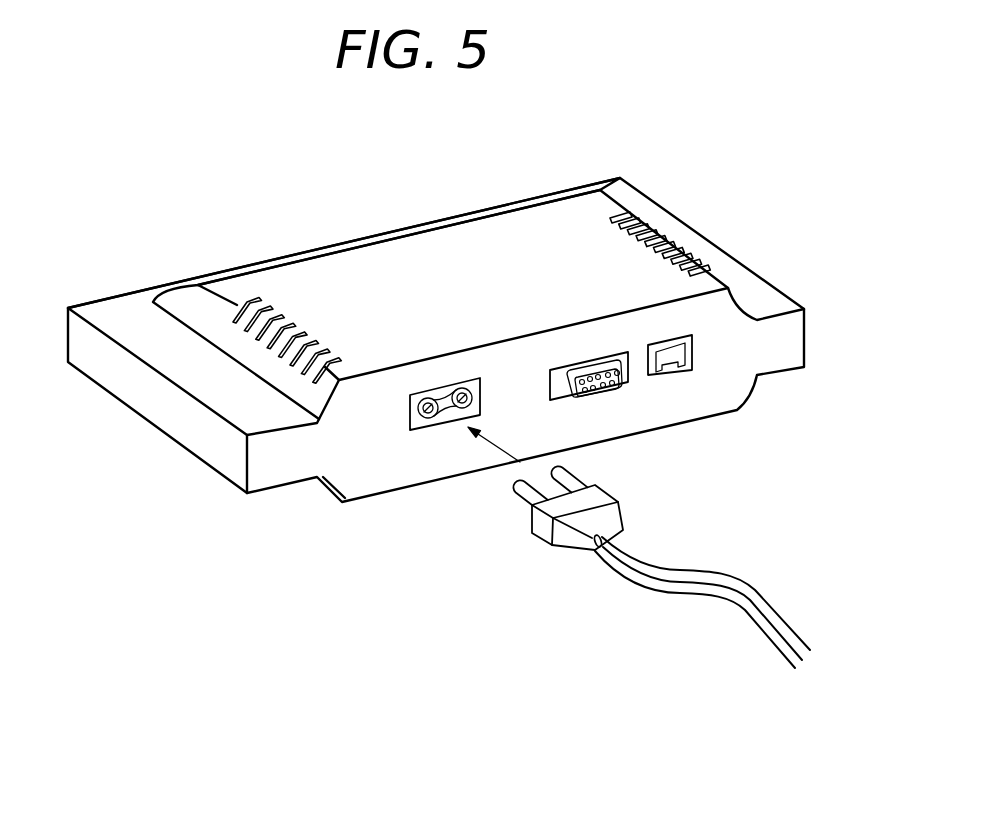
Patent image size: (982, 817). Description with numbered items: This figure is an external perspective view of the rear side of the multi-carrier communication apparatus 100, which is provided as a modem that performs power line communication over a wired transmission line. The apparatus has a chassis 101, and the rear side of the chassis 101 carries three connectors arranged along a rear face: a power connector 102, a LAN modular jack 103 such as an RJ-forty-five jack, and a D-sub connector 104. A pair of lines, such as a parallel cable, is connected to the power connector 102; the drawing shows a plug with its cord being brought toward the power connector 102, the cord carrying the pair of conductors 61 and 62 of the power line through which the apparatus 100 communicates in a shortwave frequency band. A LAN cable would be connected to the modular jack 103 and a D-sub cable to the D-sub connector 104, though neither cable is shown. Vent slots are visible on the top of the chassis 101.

The multi-carrier communication apparatus 100 is at (437, 212).
The chassis 101 is at (227, 268).
The power connector 102 is at (438, 429).
The LAN modular jack 103 is at (672, 375).
The D-sub connector 104 is at (600, 397).
The conductor 61 is at (743, 592).
The conductor 62 is at (720, 595).